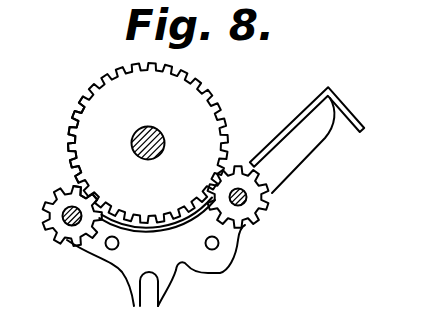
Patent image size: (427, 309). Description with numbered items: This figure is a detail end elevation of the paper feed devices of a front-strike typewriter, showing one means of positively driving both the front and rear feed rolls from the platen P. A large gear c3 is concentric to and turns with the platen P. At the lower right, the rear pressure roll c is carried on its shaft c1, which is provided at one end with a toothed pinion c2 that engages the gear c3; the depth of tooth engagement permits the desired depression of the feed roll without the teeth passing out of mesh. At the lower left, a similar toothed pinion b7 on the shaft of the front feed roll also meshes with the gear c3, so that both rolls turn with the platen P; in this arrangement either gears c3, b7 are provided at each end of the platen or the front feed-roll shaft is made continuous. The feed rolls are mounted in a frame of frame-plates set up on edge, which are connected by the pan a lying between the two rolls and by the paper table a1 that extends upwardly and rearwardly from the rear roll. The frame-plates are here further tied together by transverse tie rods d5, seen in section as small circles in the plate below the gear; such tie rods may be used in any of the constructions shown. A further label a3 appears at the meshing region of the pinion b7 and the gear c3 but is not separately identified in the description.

The platen P is at (85, 97).
The gear c3 is at (72, 135).
The toothed pinion b7 is at (52, 232).
The engagement of pinion with wheel a3 is at (75, 182).
The pan a is at (147, 229).
The transverse rods d5 is at (249, 264).
The paper table a1 is at (300, 116).
The rear pressure roll c is at (251, 134).
The toothed pinion c2 is at (269, 183).
The shaft of the rear feed roll c1 is at (247, 203).